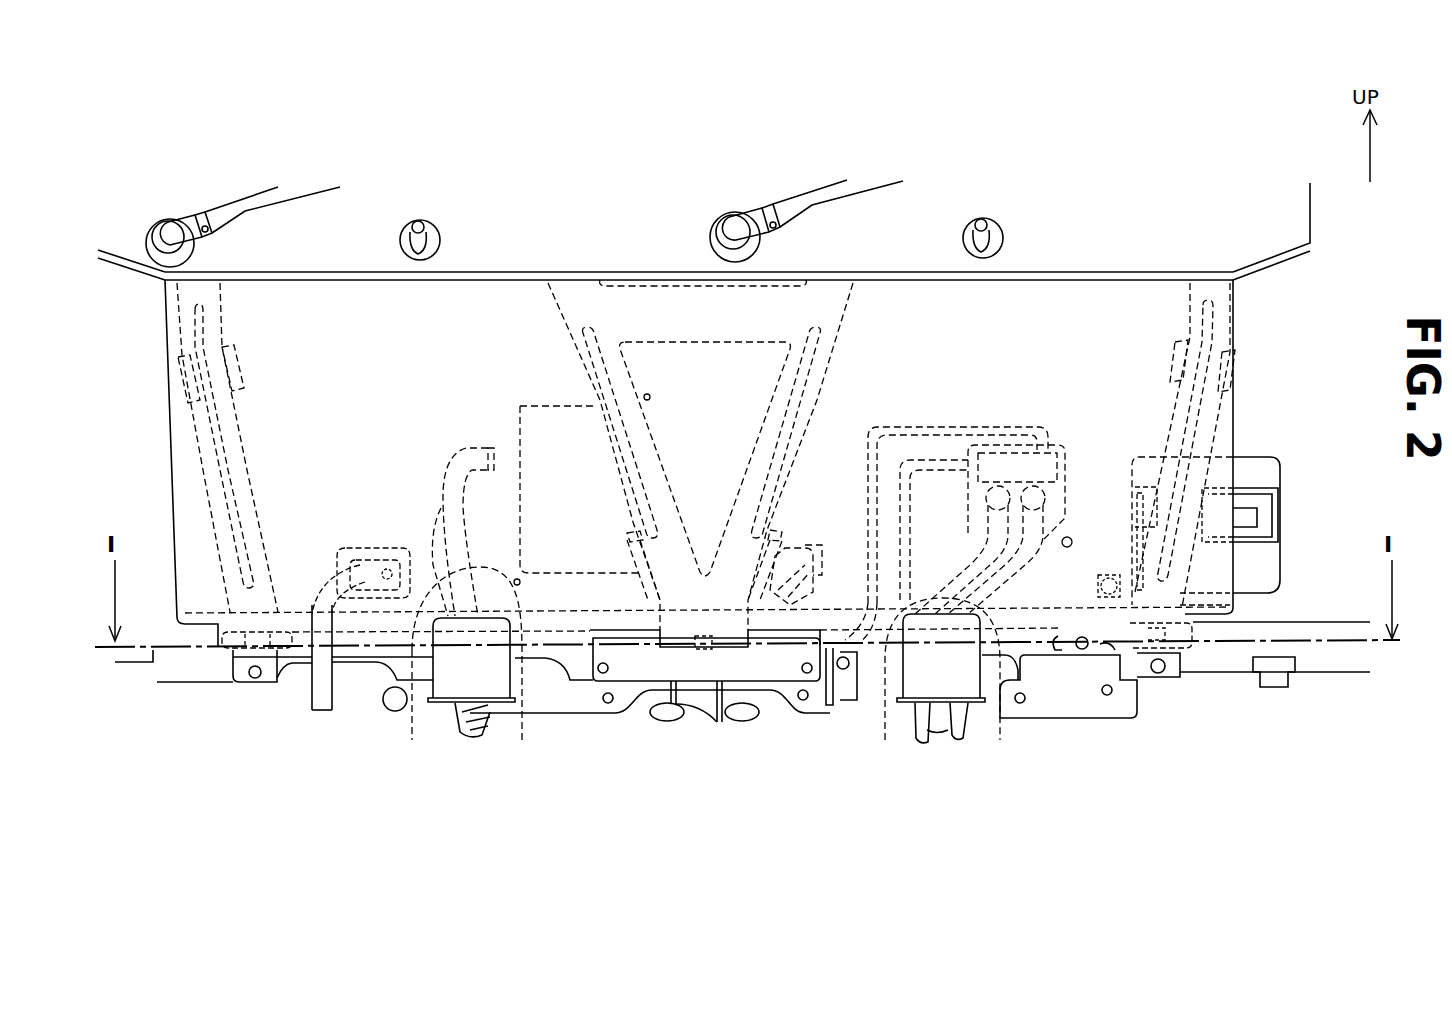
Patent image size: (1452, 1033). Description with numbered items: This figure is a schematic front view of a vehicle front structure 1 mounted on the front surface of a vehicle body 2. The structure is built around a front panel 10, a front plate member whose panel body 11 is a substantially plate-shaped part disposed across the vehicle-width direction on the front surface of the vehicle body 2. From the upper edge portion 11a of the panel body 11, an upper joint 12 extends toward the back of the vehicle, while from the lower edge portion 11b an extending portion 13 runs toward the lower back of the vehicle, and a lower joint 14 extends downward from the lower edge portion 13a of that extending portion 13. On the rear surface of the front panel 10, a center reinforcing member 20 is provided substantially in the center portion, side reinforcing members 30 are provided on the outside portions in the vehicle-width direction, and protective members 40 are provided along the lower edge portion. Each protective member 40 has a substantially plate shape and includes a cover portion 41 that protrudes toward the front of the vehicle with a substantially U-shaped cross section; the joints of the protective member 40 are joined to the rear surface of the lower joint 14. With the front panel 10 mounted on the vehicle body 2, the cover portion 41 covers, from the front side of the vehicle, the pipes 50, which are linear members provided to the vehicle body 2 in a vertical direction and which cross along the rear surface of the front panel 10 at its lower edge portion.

The vehicle front structure 1 is at (1200, 155).
The vehicle body 2 is at (1265, 270).
The front panel 10 is at (1238, 393).
The panel body 11 is at (890, 297).
The upper edge portion 11a is at (935, 280).
The lower edge portion 11b is at (1208, 608).
The upper joint 12 is at (1037, 272).
The extending portion 13 is at (1140, 620).
The lower edge portion 13a is at (1070, 627).
The lower joint 14 is at (1097, 648).
The center reinforcing member 20 is at (840, 348).
The side reinforcing member 30 is at (228, 292).
The protective member 40 is at (435, 705).
The cover portion 41 is at (473, 712).
The pipe 50 is at (427, 708).